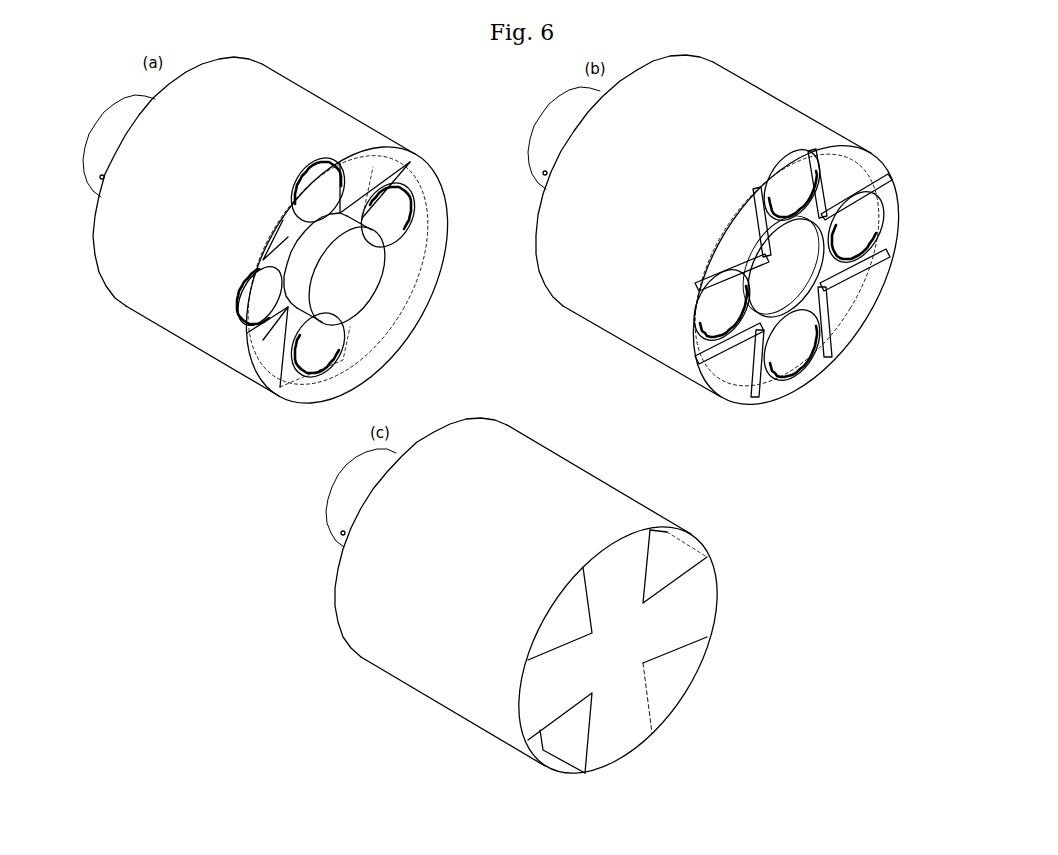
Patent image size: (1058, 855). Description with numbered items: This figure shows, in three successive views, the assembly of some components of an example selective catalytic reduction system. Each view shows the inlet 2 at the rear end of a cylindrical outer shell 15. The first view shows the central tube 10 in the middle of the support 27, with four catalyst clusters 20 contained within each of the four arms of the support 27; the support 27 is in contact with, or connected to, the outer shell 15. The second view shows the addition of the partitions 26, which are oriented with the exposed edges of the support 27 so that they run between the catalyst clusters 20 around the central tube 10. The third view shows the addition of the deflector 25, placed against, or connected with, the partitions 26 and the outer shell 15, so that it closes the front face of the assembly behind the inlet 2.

The inlet 2 is at (341, 317).
The central tube 10 is at (562, 270).
The outer shell 15 is at (517, 431).
The catalyst clusters 20 is at (365, 182).
The deflector 25 is at (617, 651).
The partitions 26 is at (842, 205).
The support 27 is at (403, 245).